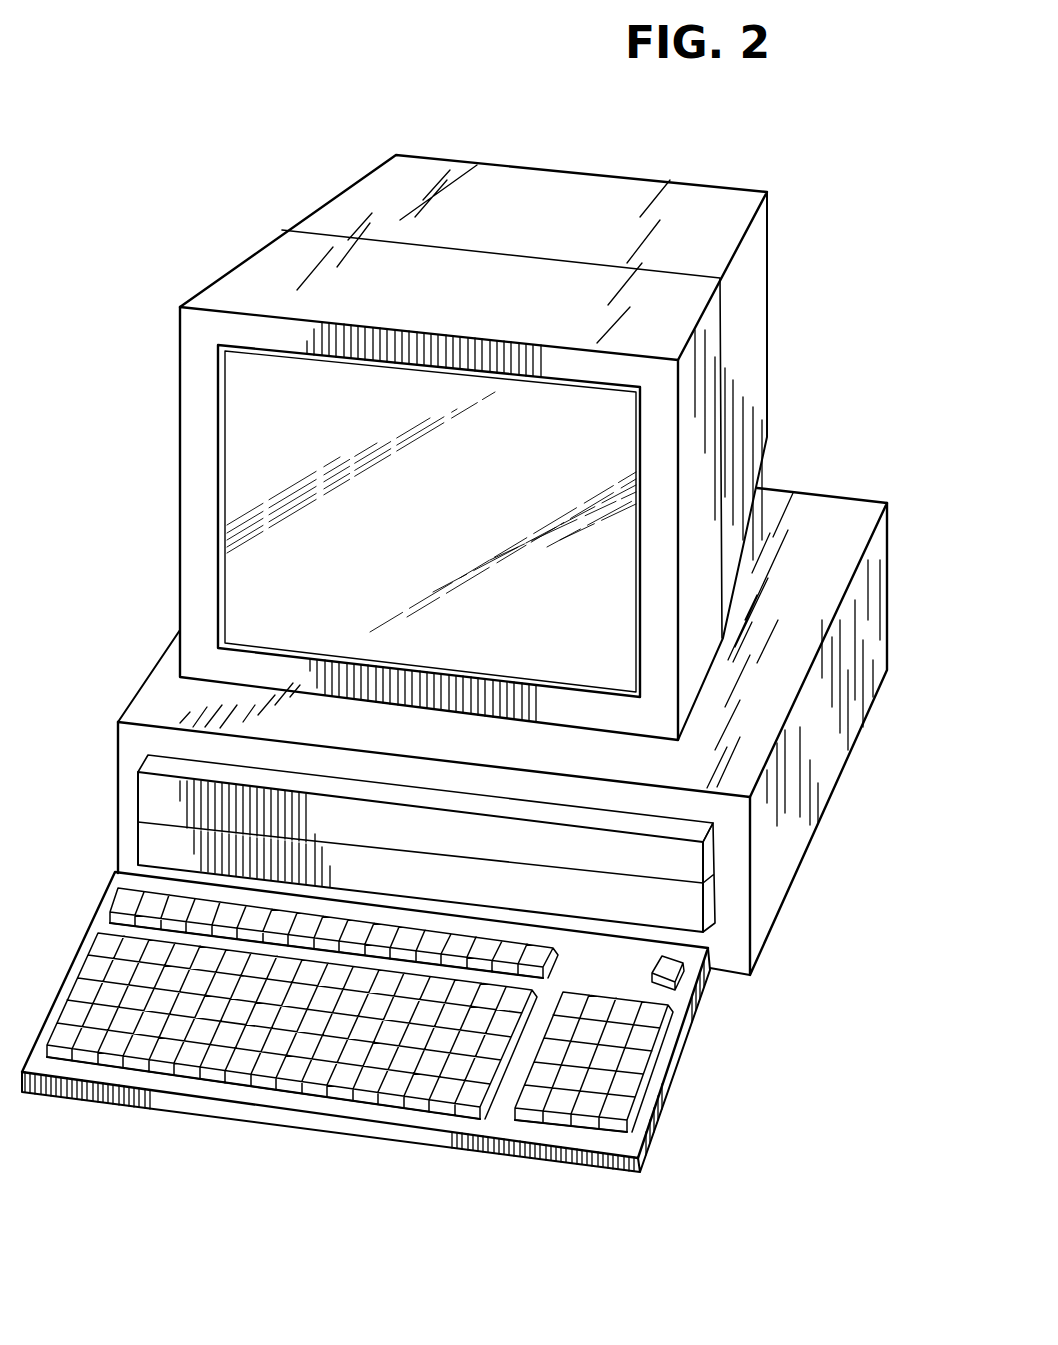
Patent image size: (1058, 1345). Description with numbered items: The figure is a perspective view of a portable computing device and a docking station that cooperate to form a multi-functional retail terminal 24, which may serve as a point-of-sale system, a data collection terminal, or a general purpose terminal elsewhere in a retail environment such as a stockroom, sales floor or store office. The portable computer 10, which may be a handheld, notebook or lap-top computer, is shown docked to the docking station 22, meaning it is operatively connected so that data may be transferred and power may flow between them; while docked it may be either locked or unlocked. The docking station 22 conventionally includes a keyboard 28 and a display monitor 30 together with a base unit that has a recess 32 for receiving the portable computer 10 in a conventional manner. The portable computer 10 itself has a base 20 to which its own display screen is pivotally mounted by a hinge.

The multi-functional retail terminal 24 is at (198, 98).
The docking station 22 is at (808, 432).
The display monitor 30 is at (253, 424).
The base 20 is at (805, 824).
The portable computer 10 is at (158, 795).
The recess 32 is at (722, 883).
The keyboard 28 is at (677, 1070).